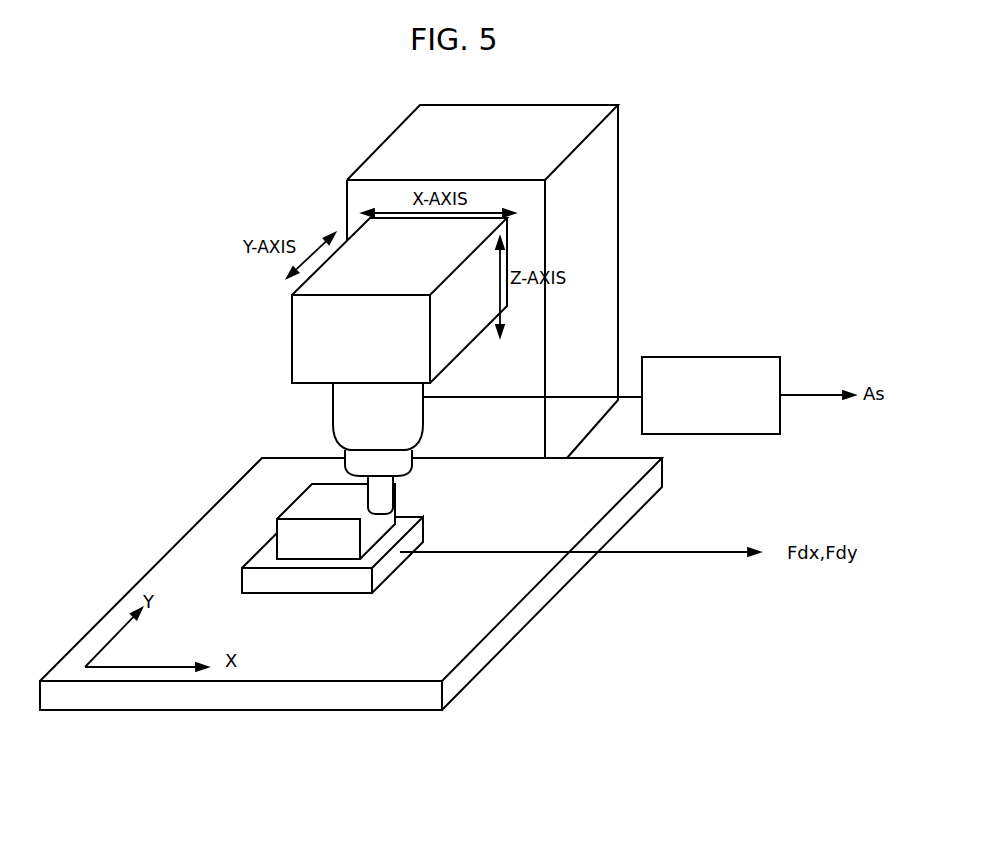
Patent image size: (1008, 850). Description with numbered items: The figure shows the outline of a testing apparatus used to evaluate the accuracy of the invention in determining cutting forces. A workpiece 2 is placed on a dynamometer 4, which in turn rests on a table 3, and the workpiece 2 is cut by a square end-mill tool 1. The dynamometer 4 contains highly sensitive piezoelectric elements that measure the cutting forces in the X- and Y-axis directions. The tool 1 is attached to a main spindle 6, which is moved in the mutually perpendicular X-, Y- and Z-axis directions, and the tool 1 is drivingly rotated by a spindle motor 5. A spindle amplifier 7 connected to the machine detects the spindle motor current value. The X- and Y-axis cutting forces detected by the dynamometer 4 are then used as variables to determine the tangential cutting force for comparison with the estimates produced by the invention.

The square end-mill tool 1 is at (387, 498).
The workpiece 2 is at (307, 508).
The table 3 is at (453, 678).
The dynamometer 4 is at (253, 557).
The spindle motor 5 is at (338, 405).
The main spindle 6 is at (345, 455).
The spindle amplifier 7 is at (721, 362).